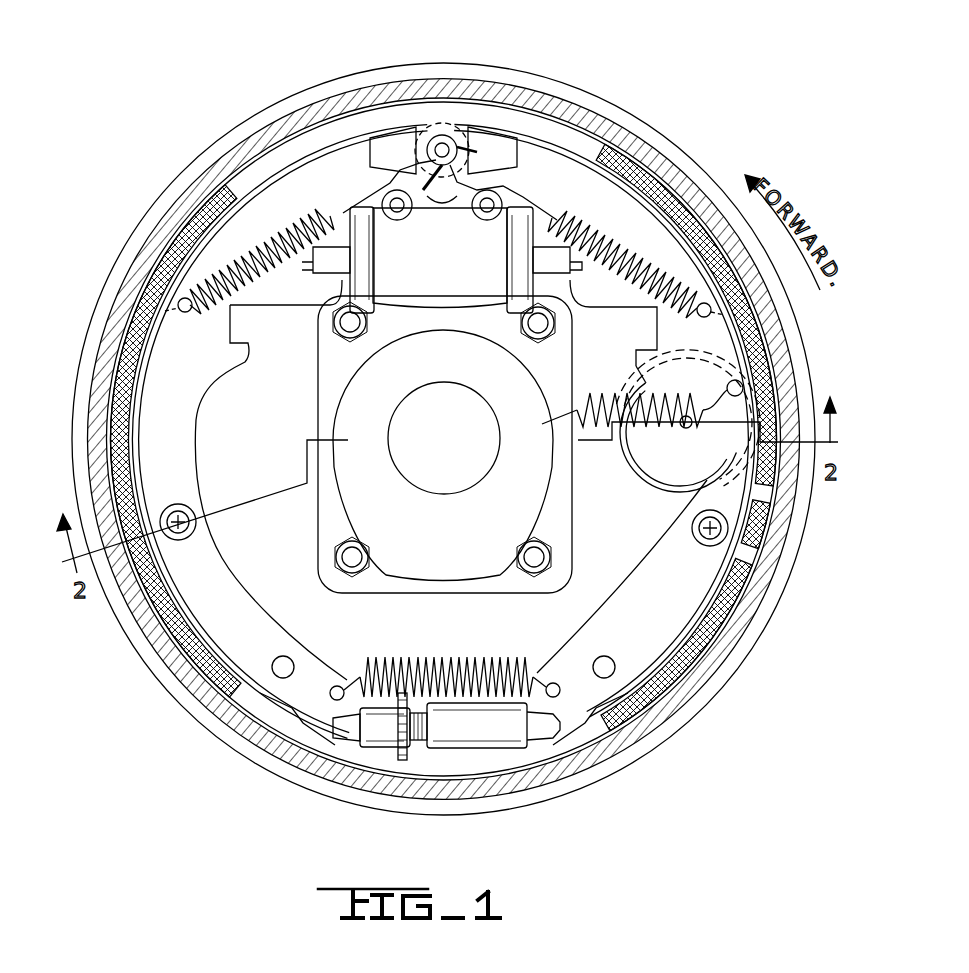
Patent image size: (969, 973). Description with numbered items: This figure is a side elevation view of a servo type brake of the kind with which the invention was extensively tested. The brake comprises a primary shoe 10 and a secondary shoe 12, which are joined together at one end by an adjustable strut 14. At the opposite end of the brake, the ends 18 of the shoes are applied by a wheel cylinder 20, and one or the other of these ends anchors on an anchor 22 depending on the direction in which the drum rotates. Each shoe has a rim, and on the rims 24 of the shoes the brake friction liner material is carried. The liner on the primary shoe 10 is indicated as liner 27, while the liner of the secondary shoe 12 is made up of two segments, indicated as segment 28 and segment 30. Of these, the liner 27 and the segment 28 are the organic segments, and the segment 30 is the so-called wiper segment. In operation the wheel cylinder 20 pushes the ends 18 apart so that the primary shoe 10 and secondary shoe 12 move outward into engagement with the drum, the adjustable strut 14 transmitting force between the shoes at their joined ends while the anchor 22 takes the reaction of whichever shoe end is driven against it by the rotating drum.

The primary shoe 10 is at (178, 439).
The secondary shoe 12 is at (702, 169).
The adjustable strut 14 is at (484, 735).
The ends of the shoes 18 is at (348, 150).
The wheel cylinder 20 is at (443, 292).
The anchor 22 is at (443, 145).
The rims of the shoes 24 is at (167, 257).
The liner of the primary shoe 27 is at (127, 317).
The organic liner segment of the secondary shoe 28 is at (667, 237).
The wiper segment 30 is at (765, 537).